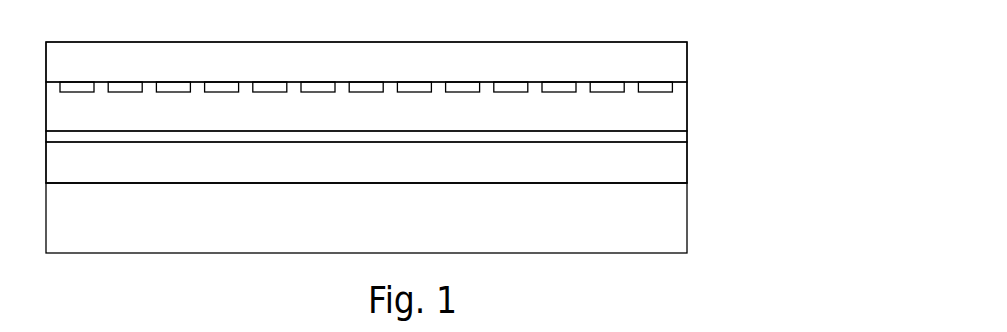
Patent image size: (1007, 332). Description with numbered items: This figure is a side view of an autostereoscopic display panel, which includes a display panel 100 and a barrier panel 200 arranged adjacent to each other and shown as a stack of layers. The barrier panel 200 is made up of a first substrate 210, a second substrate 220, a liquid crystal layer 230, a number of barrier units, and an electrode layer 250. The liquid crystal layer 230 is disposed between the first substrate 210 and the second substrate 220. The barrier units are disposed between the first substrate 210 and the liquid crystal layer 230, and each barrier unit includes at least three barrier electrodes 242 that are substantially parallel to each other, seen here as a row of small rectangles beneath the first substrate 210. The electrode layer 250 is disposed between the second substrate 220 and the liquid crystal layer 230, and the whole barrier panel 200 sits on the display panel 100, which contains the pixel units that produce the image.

The display panel 100 is at (651, 225).
The barrier panel 200 is at (805, 12).
The first substrate 210 is at (650, 67).
The second substrate 220 is at (652, 170).
The liquid crystal layer 230 is at (650, 117).
The barrier electrodes 242 is at (687, 78).
The electrode layer 250 is at (650, 139).